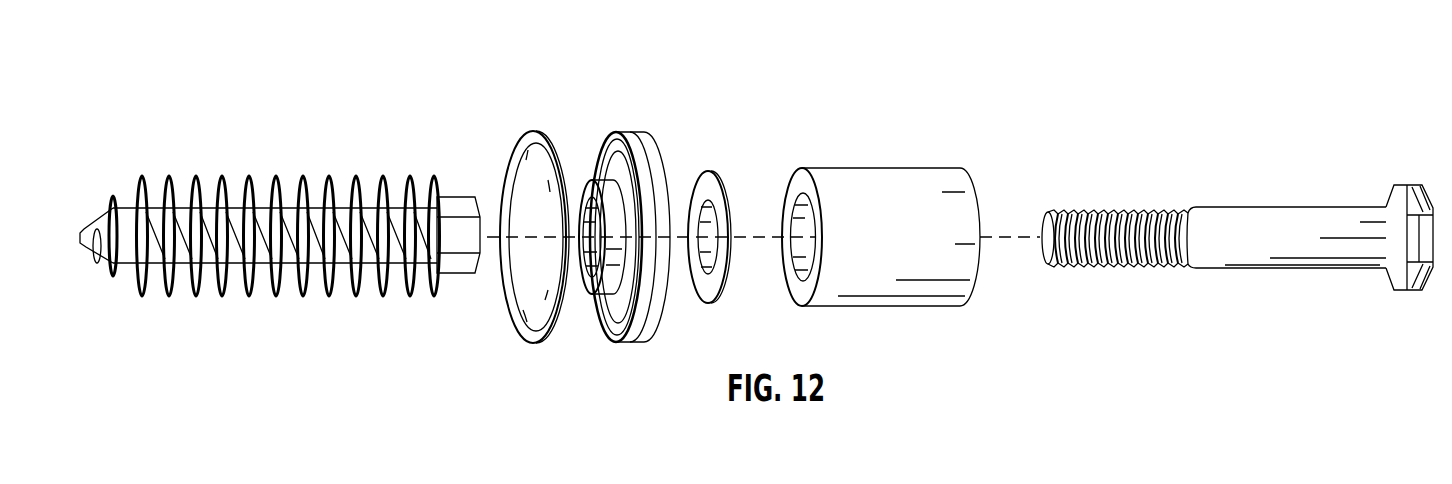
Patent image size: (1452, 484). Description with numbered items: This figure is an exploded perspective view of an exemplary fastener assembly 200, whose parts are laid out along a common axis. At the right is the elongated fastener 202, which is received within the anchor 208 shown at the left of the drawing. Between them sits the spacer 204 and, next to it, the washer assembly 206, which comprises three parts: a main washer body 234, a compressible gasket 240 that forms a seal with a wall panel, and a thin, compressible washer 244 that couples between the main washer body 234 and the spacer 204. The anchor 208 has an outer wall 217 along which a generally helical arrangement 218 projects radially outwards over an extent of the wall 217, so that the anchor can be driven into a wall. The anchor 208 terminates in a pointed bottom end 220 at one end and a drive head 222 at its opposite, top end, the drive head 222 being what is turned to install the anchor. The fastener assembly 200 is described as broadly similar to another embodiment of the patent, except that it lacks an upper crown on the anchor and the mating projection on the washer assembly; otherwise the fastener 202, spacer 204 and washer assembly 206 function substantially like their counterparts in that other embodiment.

The fastener assembly 200 is at (1012, 60).
The elongated fastener 202 is at (1313, 164).
The spacer 204 is at (895, 167).
The washer assembly 206 is at (728, 73).
The anchor 208 is at (320, 161).
The outer wall 217 is at (205, 213).
The helical arrangement 218 is at (258, 296).
The pointed bottom end 220 is at (82, 239).
The drive head 222 is at (458, 278).
The main washer body 234 is at (625, 128).
The compressible gasket 240 is at (534, 128).
The thin compressible washer 244 is at (710, 172).